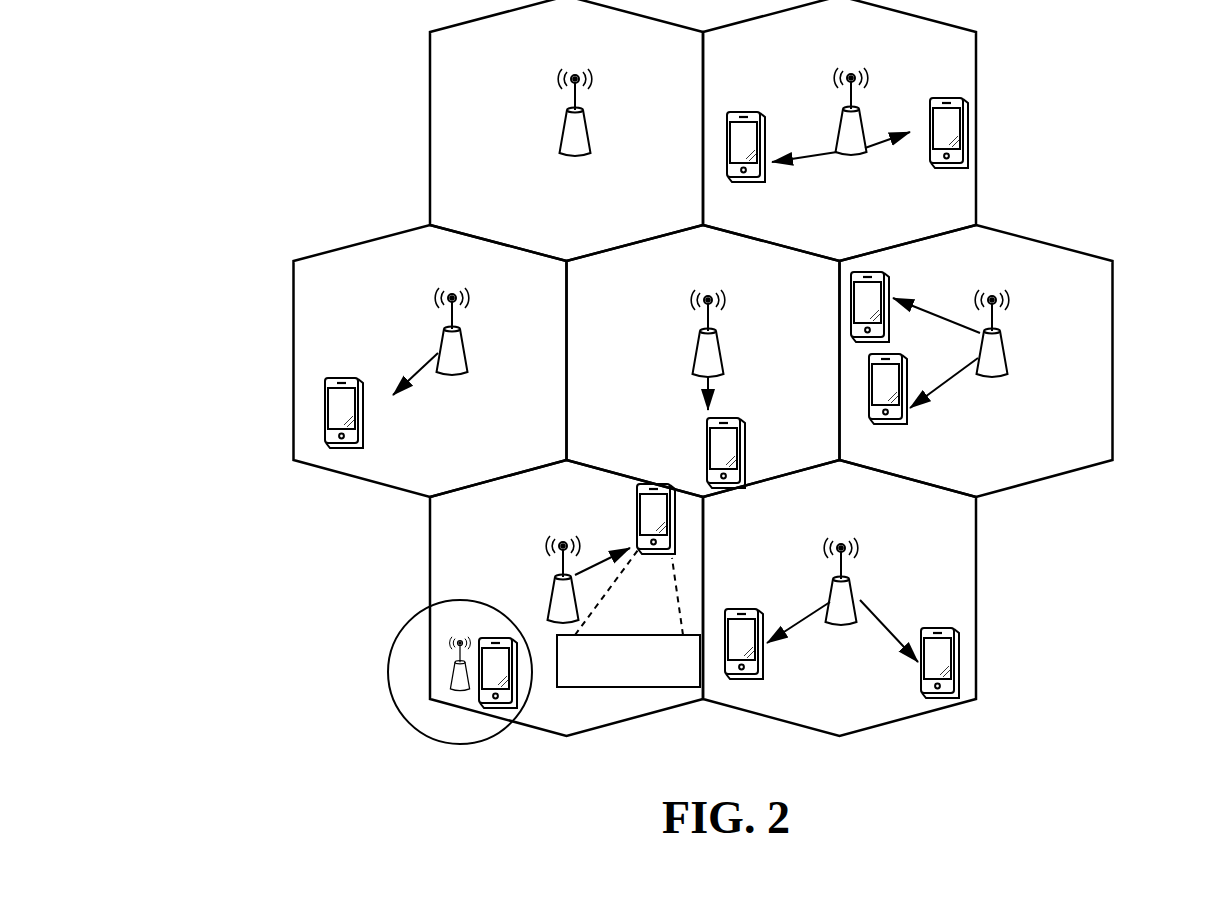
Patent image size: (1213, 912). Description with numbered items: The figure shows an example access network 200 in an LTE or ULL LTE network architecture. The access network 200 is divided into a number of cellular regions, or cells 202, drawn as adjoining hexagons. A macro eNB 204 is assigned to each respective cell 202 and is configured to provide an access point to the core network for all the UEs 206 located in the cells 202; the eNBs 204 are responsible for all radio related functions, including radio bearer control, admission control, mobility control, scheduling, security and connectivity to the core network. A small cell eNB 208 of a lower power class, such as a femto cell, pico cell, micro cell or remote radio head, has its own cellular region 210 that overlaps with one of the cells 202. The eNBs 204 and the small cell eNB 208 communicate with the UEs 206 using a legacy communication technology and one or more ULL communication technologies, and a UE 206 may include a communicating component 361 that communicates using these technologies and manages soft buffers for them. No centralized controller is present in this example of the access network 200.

The access network 200 is at (197, 82).
The cellular region 202 is at (428, 83).
The macro eNB 204 is at (570, 63).
The UE 206 is at (947, 99).
The small cell eNB 208 is at (458, 660).
The cellular region of small cell eNB 210 is at (403, 677).
The communicating component 361 is at (583, 687).